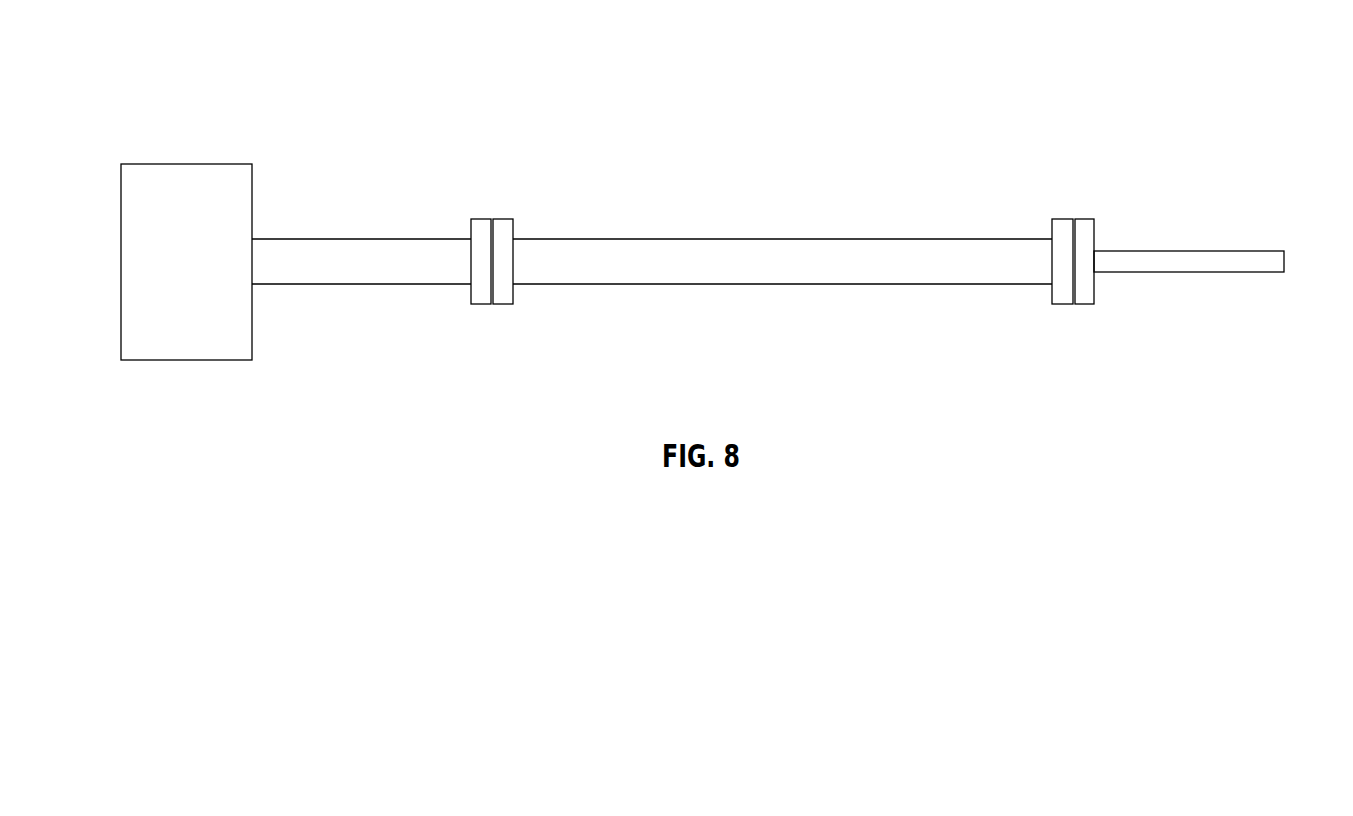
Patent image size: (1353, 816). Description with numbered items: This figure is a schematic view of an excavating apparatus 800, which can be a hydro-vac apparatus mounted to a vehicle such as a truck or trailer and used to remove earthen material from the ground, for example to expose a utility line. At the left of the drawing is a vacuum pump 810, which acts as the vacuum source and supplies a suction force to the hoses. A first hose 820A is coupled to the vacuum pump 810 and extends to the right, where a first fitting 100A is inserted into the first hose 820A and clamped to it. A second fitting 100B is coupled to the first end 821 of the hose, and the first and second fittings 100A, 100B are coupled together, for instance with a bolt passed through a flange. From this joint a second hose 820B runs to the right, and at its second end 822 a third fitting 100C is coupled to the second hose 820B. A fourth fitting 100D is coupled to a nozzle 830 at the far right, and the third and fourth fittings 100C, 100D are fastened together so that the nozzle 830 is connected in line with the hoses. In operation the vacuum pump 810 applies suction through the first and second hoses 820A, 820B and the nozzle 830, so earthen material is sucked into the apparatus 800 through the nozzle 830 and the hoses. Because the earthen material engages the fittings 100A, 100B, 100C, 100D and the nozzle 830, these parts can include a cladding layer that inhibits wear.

The excavating apparatus 800 is at (195, 75).
The vacuum pump 810 is at (187, 360).
The first hose 820A is at (380, 286).
The second hose 820B is at (837, 286).
The first end 821 is at (454, 276).
The second end 822 is at (1113, 277).
The first fitting 100A is at (480, 305).
The second fitting 100B is at (503, 306).
The third fitting 100C is at (1062, 306).
The fourth fitting 100D is at (1085, 306).
The nozzle 830 is at (1190, 274).